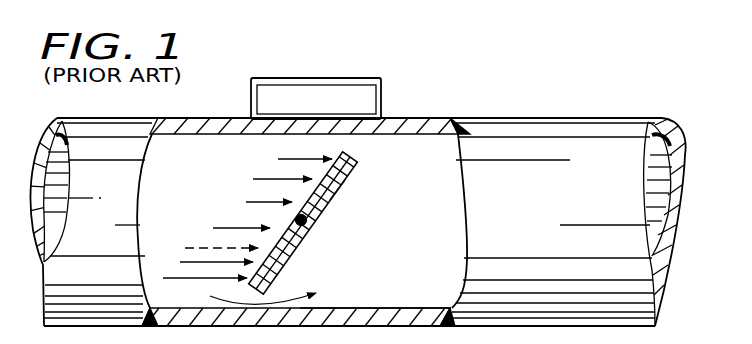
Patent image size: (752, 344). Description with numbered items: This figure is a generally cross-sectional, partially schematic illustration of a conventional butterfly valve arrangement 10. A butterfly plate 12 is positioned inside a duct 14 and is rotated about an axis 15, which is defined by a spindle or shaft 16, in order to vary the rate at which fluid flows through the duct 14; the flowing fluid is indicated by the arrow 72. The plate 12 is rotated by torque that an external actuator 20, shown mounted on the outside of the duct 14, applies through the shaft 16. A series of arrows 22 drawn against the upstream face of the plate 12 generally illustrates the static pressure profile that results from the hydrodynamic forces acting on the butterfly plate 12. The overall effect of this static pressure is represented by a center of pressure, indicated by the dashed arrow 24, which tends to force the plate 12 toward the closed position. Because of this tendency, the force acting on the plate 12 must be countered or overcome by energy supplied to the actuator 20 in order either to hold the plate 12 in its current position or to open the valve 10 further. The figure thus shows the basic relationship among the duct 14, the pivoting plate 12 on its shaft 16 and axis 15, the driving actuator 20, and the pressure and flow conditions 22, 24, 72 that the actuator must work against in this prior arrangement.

The butterfly valve arrangement 10 is at (460, 106).
The butterfly plate 12 is at (353, 169).
The duct 14 is at (448, 327).
The axis 15 is at (309, 221).
The spindle or shaft 16 is at (337, 192).
The external actuator 20 is at (383, 100).
The arrows (static pressure profile) 22 is at (246, 203).
The dashed arrow (center of pressure) 24 is at (212, 250).
The arrow (fluid flow) 72 is at (297, 292).